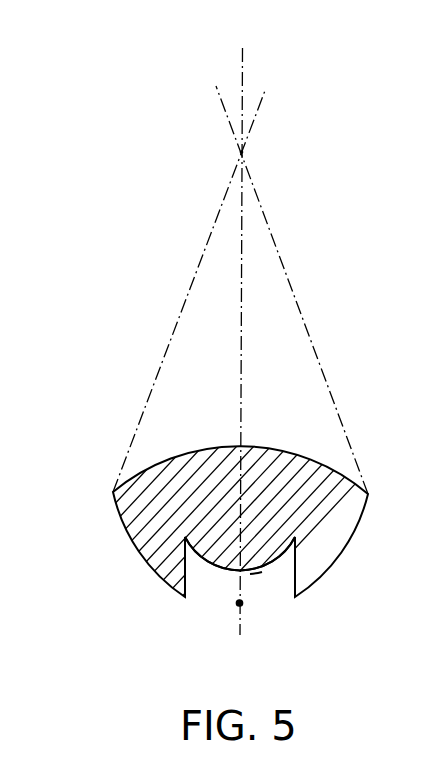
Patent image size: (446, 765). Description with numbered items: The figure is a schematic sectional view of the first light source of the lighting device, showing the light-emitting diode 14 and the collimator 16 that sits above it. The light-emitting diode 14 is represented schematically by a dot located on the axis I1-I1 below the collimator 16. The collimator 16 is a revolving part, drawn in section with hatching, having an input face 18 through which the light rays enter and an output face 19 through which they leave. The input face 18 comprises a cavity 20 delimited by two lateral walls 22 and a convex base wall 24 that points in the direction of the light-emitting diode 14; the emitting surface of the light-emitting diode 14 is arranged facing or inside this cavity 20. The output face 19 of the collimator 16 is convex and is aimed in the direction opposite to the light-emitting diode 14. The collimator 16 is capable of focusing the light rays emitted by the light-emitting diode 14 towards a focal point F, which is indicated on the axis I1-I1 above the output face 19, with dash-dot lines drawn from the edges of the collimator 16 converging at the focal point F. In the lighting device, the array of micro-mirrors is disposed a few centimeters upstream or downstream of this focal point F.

The light-emitting diode 14 is at (236, 606).
The collimator 16 is at (330, 547).
The input face 18 is at (186, 595).
The output face 19 is at (312, 420).
The cavity 20 is at (215, 574).
The lateral wall 22 is at (294, 586).
The convex base wall 24 is at (257, 576).
The focal point F is at (245, 148).
The optical axis I1-I1 is at (243, 77).